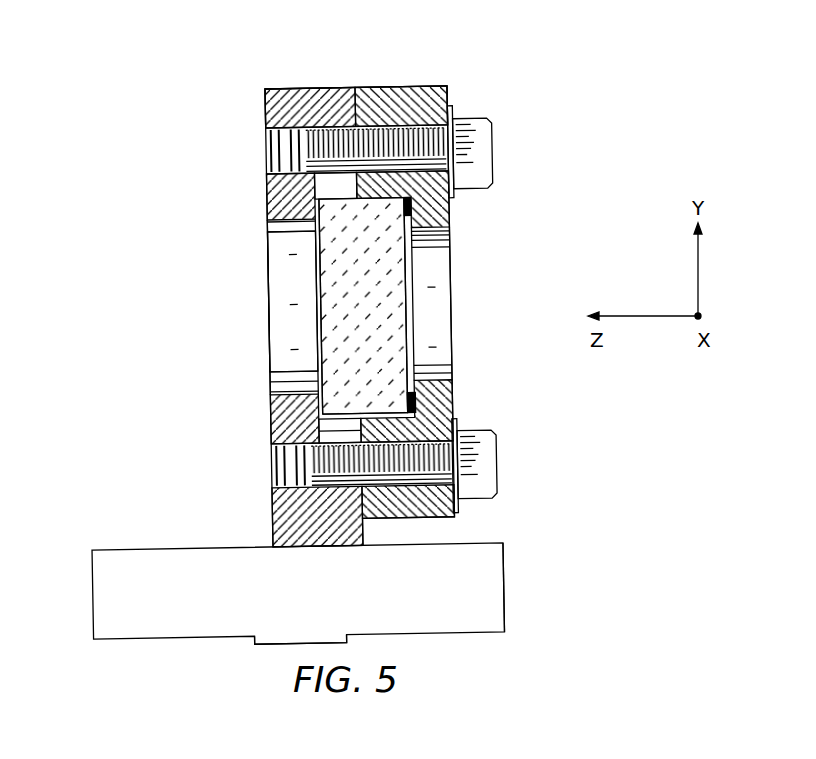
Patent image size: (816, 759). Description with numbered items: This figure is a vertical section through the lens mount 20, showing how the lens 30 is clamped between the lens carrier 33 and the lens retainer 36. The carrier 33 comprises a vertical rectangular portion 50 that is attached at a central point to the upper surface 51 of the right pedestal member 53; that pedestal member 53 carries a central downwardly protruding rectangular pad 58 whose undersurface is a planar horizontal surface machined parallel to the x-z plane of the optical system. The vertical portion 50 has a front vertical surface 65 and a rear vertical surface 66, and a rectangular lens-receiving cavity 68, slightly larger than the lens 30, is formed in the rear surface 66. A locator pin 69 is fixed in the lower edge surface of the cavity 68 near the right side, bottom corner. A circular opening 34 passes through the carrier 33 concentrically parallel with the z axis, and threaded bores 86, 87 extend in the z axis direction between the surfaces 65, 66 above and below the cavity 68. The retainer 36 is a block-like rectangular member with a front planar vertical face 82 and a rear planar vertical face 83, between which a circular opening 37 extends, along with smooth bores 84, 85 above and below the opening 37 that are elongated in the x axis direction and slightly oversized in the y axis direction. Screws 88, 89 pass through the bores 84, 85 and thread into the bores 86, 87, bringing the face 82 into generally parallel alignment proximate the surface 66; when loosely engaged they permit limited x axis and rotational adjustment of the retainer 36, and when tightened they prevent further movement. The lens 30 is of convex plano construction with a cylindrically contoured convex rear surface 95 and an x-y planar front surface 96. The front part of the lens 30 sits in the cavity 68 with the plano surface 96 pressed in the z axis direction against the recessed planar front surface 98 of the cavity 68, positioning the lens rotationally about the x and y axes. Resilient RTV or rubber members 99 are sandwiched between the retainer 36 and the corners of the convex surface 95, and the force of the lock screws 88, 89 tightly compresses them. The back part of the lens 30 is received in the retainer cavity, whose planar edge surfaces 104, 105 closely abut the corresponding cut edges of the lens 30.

The mount 20 is at (128, 156).
The lens 30 is at (378, 338).
The lens carrier 33 is at (332, 85).
The opening 34 is at (268, 390).
The lens retainer 36 is at (420, 85).
The opening 37 is at (440, 240).
The vertical rectangular portion 50 is at (265, 107).
The upper surface 51 is at (148, 549).
The pedestal member 53 is at (493, 575).
The rectangular pad 58 is at (290, 650).
The front vertical surface 65 is at (265, 207).
The rear vertical surface 66 is at (366, 542).
The lens-receiving cavity 68 is at (337, 306).
The locator pin 69 is at (344, 387).
The front planar vertical face 82 is at (362, 516).
The rear planar vertical face 83 is at (453, 392).
The bore 84 is at (415, 130).
The bore 85 is at (431, 444).
The threaded bore 86 is at (267, 158).
The threaded bore 87 is at (276, 477).
The screw 88 is at (494, 159).
The screw 89 is at (502, 468).
The convex rear surface 95 is at (402, 293).
The planar front surface 96 is at (318, 313).
The front surface 98 is at (270, 244).
The resilient members 99 is at (410, 206).
The planar edge surface 104 is at (339, 190).
The planar edge surface 105 is at (374, 412).